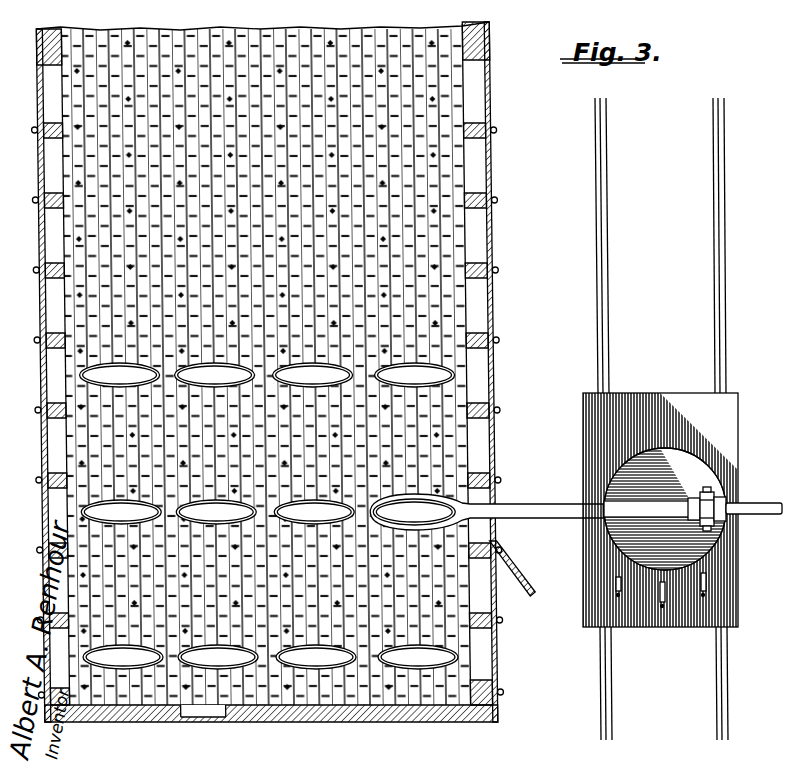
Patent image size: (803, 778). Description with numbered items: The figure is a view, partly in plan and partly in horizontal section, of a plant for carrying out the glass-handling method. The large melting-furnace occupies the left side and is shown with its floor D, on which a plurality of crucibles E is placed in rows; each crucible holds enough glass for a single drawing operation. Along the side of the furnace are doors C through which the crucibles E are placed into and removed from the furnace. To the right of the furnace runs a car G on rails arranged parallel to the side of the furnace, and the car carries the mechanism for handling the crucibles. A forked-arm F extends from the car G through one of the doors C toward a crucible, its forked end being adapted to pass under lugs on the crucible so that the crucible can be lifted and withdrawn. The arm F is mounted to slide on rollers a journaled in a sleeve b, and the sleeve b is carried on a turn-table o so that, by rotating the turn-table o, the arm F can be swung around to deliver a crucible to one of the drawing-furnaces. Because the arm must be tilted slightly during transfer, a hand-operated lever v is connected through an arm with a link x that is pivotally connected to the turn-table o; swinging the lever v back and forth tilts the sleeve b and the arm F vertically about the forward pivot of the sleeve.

The doors C is at (487, 224).
The floor D is at (441, 190).
The crucibles E is at (268, 516).
The forked-arm F is at (515, 505).
The car G is at (660, 419).
The turn-table o is at (665, 510).
The rollers a is at (688, 509).
The sleeve b is at (647, 509).
The link x is at (707, 492).
The hand-operated lever v is at (730, 518).